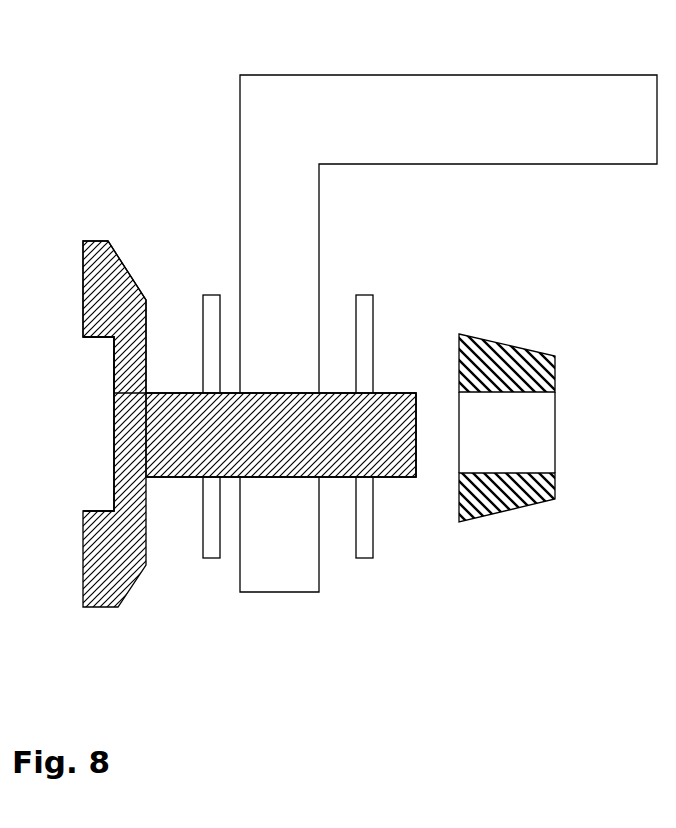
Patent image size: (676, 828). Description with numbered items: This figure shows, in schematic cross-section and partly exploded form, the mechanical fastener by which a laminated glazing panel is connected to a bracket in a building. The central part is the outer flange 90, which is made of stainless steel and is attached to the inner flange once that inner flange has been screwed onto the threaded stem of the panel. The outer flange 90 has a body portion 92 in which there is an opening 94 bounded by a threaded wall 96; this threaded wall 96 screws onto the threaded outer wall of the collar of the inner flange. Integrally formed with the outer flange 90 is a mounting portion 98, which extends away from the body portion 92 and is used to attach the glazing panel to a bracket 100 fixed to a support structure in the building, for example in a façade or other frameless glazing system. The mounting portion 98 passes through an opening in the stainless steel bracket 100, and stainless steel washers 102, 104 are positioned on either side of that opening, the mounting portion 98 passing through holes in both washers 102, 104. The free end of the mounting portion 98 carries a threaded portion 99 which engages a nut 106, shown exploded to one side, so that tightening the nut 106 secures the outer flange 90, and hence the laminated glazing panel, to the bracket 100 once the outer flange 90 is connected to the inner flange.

The outer flange 90 is at (182, 627).
The body portion 92 is at (108, 242).
The opening 94 is at (90, 410).
The threaded wall 96 is at (100, 338).
The mounting portion 98 is at (180, 420).
The threaded portion 99 is at (342, 467).
The bracket 100 is at (362, 103).
The washer 102 is at (209, 305).
The washer 104 is at (362, 333).
The nut 106 is at (495, 368).